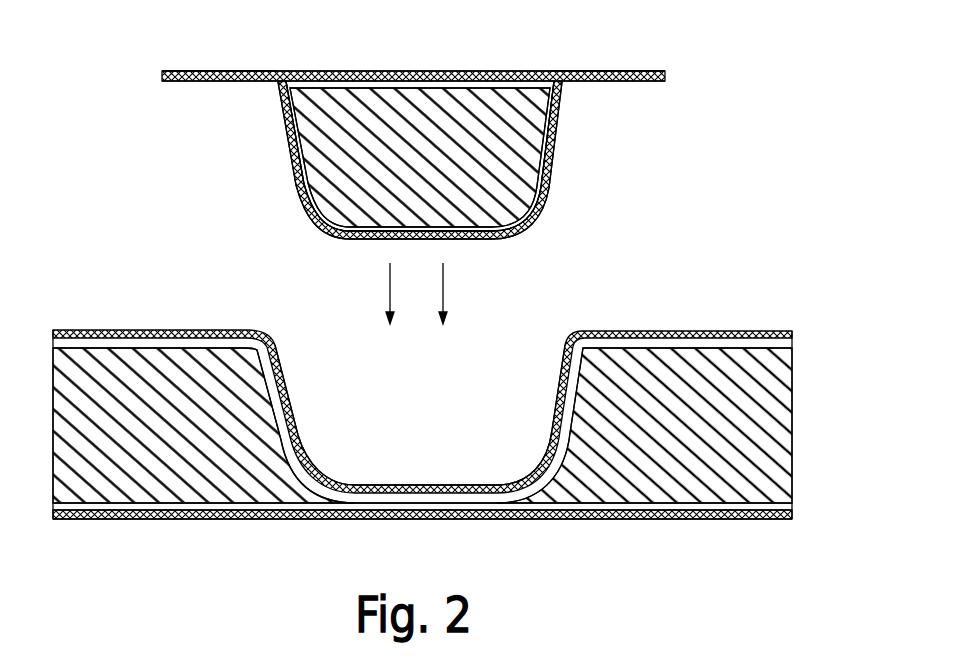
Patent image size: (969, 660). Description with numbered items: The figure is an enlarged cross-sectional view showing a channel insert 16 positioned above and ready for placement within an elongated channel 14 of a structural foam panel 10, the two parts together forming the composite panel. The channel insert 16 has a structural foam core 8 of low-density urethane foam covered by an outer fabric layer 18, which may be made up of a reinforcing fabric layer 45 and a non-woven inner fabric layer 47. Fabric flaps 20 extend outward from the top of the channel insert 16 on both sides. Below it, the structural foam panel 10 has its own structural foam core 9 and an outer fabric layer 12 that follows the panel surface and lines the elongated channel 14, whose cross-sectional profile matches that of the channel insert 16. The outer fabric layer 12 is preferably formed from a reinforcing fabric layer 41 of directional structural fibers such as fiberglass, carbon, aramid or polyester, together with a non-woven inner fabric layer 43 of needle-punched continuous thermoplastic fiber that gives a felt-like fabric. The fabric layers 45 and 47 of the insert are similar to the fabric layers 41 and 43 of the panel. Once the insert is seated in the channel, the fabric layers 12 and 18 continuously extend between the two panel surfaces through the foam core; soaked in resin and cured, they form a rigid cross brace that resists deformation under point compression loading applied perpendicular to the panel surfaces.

The structural foam core 8 is at (411, 157).
The structural foam core 9 is at (673, 427).
The structural foam panel 10 is at (180, 480).
The outer fabric layer 12 is at (135, 330).
The elongated channel 14 is at (490, 458).
The channel insert 16 is at (555, 140).
The outer fabric layer 18 is at (436, 71).
The fabric flap 20 is at (216, 71).
The reinforcing fabric layer 41 is at (672, 331).
The non-woven inner fabric layer 43 is at (752, 346).
The reinforcing fabric layer 45 is at (280, 133).
The non-woven inner fabric layer 47 is at (298, 160).